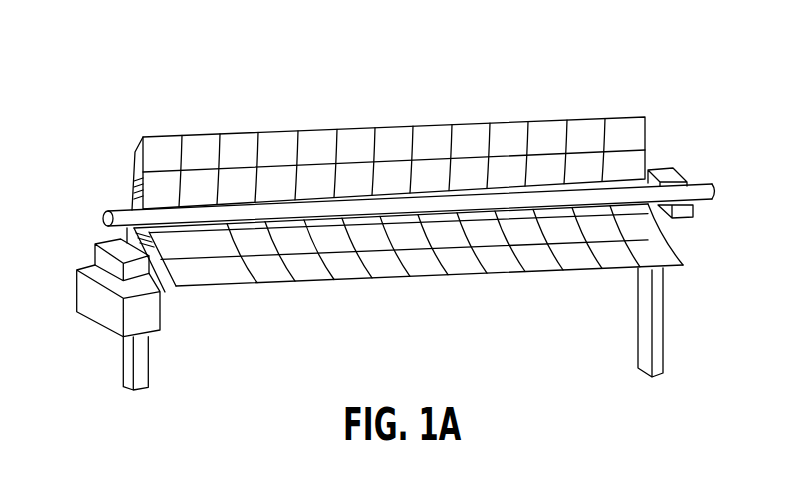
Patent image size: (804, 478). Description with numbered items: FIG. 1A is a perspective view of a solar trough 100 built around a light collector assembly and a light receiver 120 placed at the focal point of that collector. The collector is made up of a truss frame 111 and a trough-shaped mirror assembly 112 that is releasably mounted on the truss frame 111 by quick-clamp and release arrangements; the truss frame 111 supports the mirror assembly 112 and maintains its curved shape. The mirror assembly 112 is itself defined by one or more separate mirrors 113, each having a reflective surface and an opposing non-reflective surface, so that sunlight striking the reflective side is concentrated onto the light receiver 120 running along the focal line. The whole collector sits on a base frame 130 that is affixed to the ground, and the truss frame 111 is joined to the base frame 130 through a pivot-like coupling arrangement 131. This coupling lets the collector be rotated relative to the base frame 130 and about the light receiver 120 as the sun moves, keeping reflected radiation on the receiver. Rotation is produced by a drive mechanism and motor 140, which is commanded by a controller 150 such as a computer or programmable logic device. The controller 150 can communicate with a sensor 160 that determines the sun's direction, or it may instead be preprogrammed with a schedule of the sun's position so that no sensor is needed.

The solar trough 100 is at (152, 77).
The truss frame 111 is at (131, 172).
The trough-shaped mirror assembly 112 is at (204, 136).
The mirrors 113 is at (323, 145).
The light receiver 120 is at (577, 188).
The base frame 130 is at (664, 300).
The pivot-like coupling arrangement 131 is at (127, 209).
The drive mechanism and motor 140 is at (695, 212).
The controller 150 is at (86, 300).
The sensor 160 is at (94, 259).